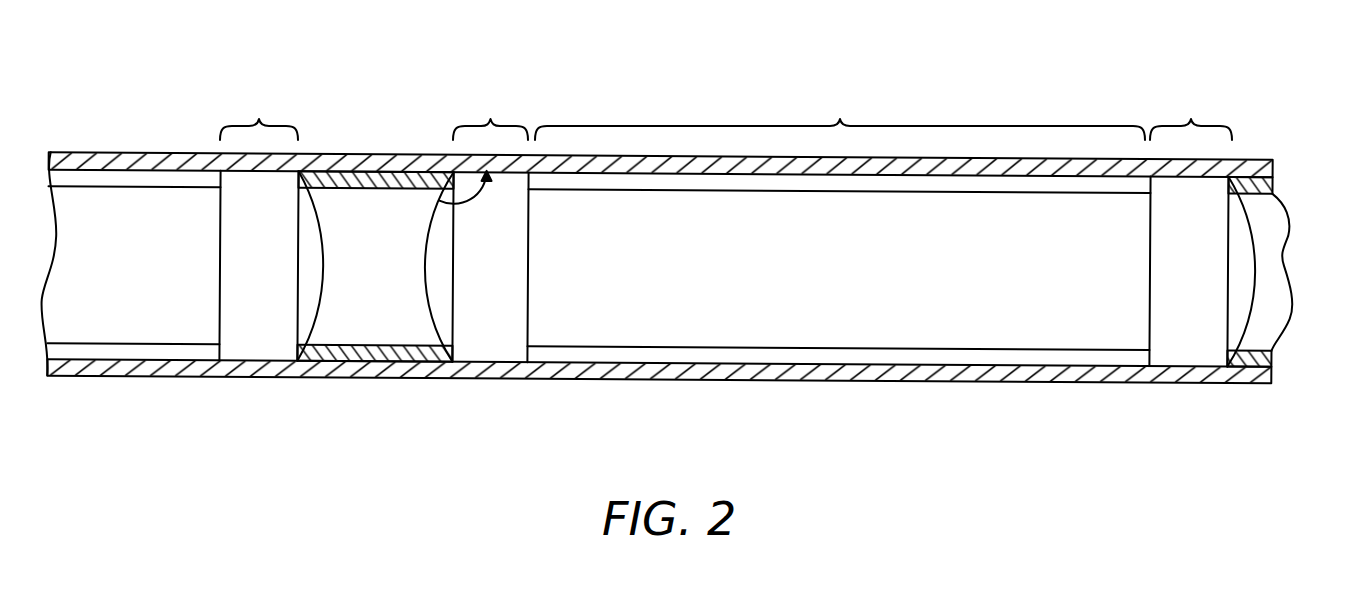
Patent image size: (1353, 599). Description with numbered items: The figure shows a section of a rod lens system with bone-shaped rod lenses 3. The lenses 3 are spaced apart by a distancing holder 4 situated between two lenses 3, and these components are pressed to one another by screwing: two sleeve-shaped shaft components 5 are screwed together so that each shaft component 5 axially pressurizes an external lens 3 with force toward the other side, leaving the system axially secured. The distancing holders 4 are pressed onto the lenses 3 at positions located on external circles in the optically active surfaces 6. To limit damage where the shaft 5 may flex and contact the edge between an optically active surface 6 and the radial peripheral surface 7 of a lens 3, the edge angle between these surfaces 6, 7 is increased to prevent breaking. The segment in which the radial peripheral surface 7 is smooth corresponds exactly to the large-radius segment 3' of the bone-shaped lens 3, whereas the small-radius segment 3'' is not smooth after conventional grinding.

The bone-shaped rod lens 3 is at (599, 312).
The segment of the bone-shaped lens with large radius 3' is at (726, 98).
The segment of the bone-shaped lens with small radius 3'' is at (840, 100).
The distancing holder 4 is at (1274, 186).
The sleeve-shaped shaft component 5 is at (744, 374).
The optically active surface 6 is at (425, 287).
The radial peripheral surface 7 is at (498, 364).